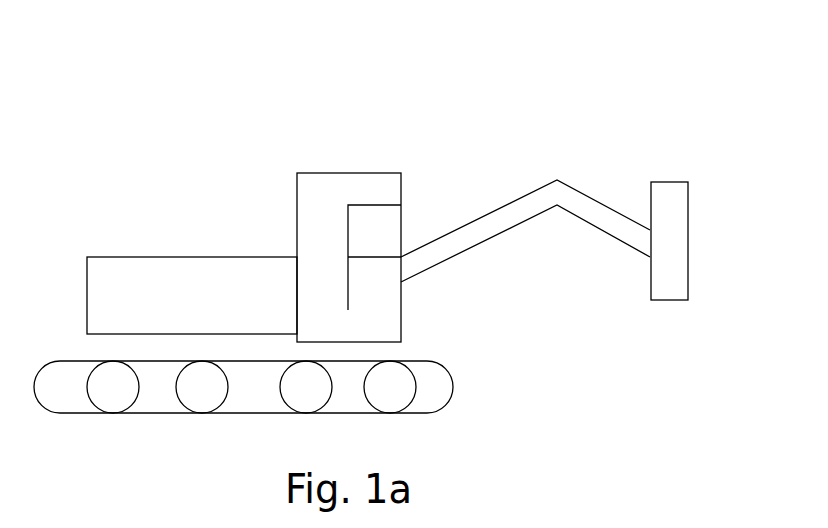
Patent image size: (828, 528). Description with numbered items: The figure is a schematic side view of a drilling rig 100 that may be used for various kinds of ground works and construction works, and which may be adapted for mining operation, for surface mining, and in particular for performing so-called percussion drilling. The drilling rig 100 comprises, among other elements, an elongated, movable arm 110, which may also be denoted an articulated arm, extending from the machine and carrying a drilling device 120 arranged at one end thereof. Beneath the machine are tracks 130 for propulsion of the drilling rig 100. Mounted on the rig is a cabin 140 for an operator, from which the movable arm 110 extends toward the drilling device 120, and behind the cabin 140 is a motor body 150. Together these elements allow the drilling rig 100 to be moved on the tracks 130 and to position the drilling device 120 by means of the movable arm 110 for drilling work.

The drilling rig 100 is at (376, 105).
The movable arm 110 is at (497, 211).
The drilling device 120 is at (667, 300).
The tracks 130 is at (453, 387).
The cabin 140 is at (297, 200).
The motor body 150 is at (125, 257).